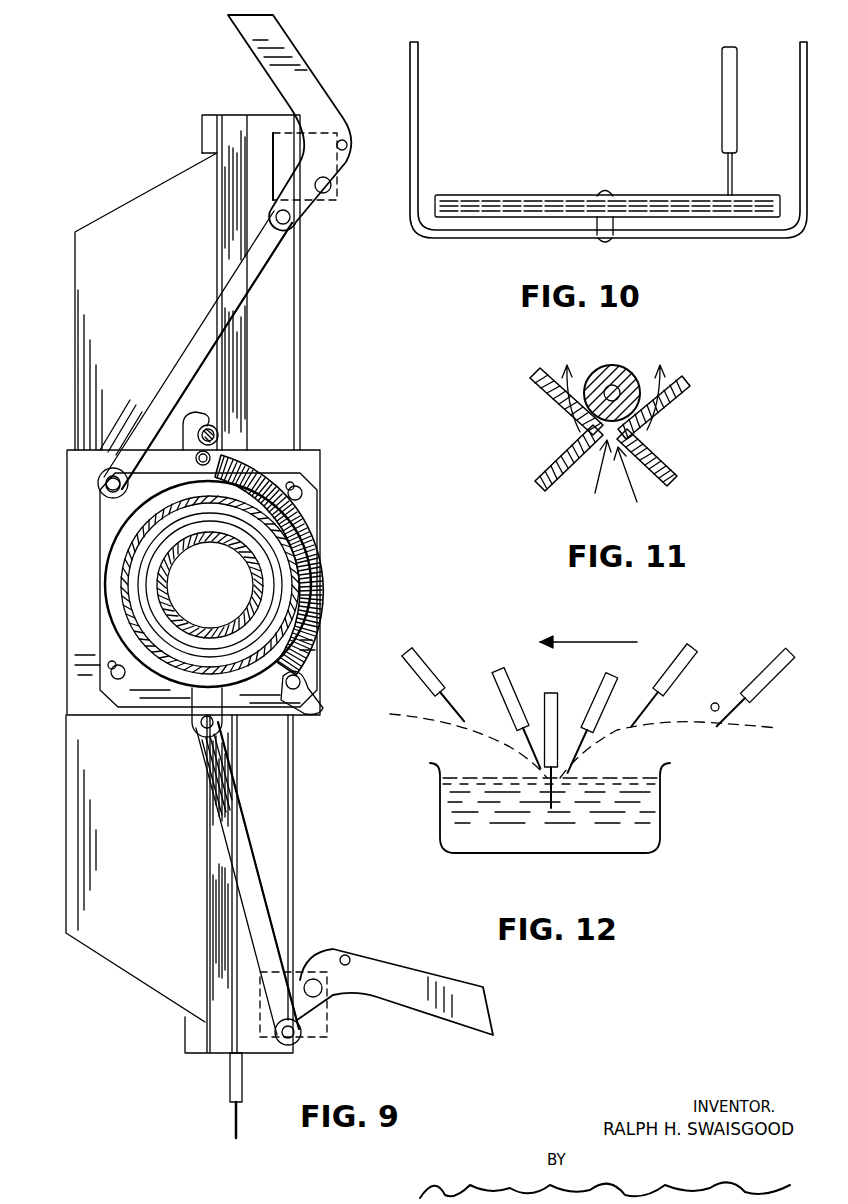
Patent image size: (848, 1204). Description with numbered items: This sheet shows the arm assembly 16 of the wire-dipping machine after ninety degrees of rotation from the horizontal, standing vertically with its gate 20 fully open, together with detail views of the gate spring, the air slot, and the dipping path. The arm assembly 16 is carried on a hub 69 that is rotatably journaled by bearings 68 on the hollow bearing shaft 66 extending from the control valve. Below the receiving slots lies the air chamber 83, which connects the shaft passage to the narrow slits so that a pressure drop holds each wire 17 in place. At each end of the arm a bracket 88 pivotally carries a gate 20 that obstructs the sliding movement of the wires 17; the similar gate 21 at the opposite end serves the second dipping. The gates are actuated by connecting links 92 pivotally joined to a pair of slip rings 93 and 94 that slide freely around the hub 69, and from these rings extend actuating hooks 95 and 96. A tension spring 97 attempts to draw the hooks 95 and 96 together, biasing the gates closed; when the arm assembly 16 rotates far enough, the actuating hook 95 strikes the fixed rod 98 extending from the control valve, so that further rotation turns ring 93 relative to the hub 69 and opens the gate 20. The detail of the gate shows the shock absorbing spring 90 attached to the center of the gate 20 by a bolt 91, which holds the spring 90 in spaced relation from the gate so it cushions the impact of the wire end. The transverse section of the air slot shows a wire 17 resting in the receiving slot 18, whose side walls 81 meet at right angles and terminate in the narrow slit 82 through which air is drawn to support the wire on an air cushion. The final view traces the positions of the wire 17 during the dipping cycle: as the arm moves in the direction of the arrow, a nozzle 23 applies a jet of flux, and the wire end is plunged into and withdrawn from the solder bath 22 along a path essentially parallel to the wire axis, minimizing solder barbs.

In FIG. 9, the arm assembly 16 is at (323, 285).
In FIG. 9, the wire 17 is at (233, 1083).
In FIG. 10, the wire 17 is at (730, 87).
In FIG. 11, the wire 17 is at (611, 372).
In FIG. 12, the wire 17 is at (600, 693).
In FIG. 11, the receiving slot 18 is at (643, 380).
In FIG. 9, the gate 20 is at (405, 1000).
In FIG. 10, the gate 20 is at (418, 85).
In FIG. 9, the gate 21 is at (293, 68).
In FIG. 12, the solder bath 22 is at (643, 836).
In FIG. 12, the nozzle 23 is at (713, 703).
In FIG. 9, the hollow bearing shaft 66 is at (257, 592).
In FIG. 9, the bearings 68 is at (158, 625).
In FIG. 9, the hub 69 is at (127, 593).
In FIG. 11, the side walls 81 is at (553, 375).
In FIG. 11, the slit 82 is at (636, 442).
In FIG. 9, the air chamber 83 is at (168, 249).
In FIG. 9, the bracket 88 is at (277, 133).
In FIG. 10, the shock absorbing spring 90 is at (525, 197).
In FIG. 10, the bolt 91 is at (605, 190).
In FIG. 9, the connecting link 92 is at (242, 292).
In FIG. 9, the slip ring 93 is at (190, 690).
In FIG. 9, the slip ring 94 is at (106, 481).
In FIG. 9, the actuating hook 95 is at (188, 430).
In FIG. 9, the actuating hook 96 is at (302, 717).
In FIG. 9, the tension spring 97 is at (318, 596).
In FIG. 9, the fixed rod 98 is at (218, 432).